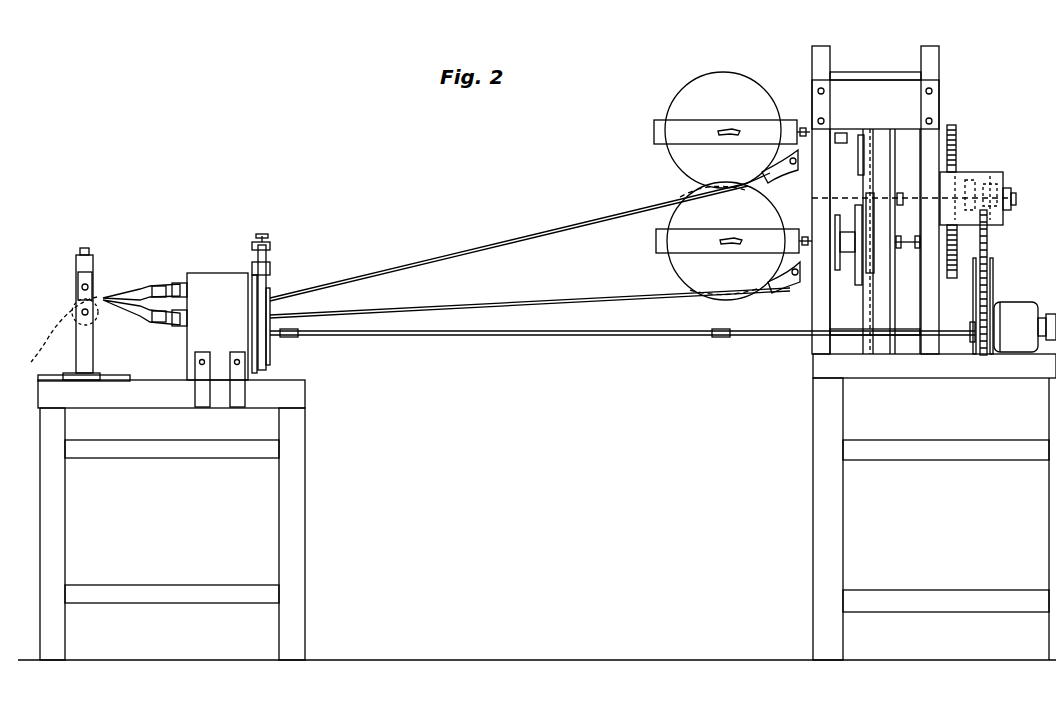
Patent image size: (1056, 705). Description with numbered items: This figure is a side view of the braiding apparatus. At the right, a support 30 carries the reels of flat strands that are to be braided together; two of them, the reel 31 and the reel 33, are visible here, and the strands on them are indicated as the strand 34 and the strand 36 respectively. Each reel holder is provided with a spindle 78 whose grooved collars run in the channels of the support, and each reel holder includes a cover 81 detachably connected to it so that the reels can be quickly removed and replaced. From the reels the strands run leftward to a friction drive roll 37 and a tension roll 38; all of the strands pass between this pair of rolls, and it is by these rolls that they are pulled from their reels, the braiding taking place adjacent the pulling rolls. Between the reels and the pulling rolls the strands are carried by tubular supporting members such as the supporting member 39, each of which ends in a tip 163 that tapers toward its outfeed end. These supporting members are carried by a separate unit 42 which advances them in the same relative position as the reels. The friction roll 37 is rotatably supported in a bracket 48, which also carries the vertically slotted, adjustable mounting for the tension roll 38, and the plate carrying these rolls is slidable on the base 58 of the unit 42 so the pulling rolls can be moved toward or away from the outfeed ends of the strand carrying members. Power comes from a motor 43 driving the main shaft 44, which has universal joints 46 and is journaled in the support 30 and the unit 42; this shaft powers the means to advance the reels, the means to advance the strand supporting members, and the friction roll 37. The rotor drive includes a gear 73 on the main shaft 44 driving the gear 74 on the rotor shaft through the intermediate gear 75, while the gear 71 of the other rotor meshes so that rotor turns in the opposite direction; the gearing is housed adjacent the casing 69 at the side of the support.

The support 30 is at (942, 58).
The reel 31 is at (750, 84).
The reel 33 is at (704, 274).
The strand 34 is at (497, 243).
The strand 36 is at (495, 304).
The friction drive roll 37 is at (97, 304).
The tension roll 38 is at (88, 277).
The supporting member 39 is at (183, 290).
The unit 42 is at (213, 272).
The motor 43 is at (1015, 310).
The main shaft 44 is at (535, 338).
The universal joint 46 is at (289, 339).
The bracket 48 is at (82, 338).
The base 58 is at (159, 396).
The gear box 69 is at (975, 172).
The gear 71 is at (955, 134).
The gear 73 is at (978, 345).
The gear 74 is at (998, 183).
The intermediate gear 75 is at (992, 245).
The spindle 78 is at (911, 247).
The cover 81 is at (678, 134).
The tip 163 is at (143, 292).